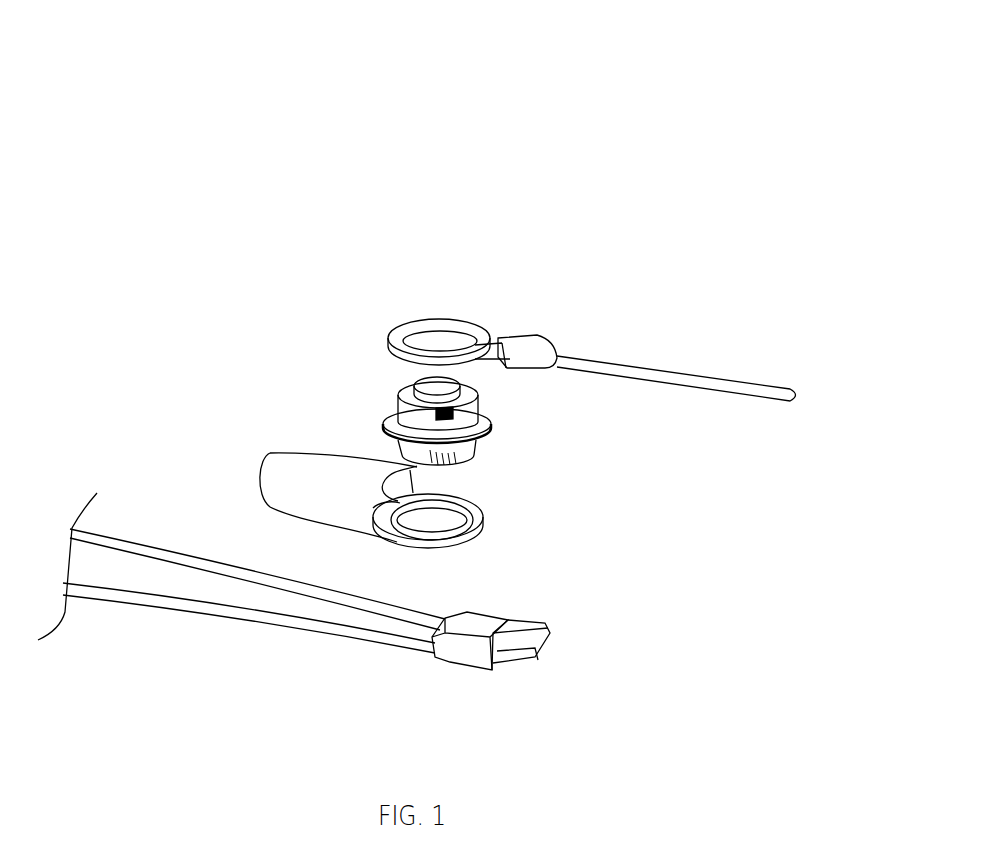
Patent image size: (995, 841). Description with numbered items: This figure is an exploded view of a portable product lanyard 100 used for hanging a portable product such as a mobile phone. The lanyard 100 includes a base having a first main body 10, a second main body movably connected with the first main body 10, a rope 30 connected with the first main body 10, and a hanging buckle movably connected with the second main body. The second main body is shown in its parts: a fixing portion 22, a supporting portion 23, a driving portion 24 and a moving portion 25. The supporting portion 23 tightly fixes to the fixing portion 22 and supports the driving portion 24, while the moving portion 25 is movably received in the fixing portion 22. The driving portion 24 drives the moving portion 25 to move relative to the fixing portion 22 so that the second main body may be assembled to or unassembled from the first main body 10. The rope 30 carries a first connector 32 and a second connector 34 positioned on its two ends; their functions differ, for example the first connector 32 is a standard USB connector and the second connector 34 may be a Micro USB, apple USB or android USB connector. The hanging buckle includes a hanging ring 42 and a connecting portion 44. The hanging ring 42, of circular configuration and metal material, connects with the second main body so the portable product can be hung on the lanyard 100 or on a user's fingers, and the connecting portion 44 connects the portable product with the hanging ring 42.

The portable product lanyard 100 is at (444, 118).
The hanging ring 42 is at (440, 330).
The connecting portion 44 is at (535, 357).
The fixing portion 22 is at (490, 427).
The driving portion 24 is at (415, 382).
The supporting portion 23 is at (410, 390).
The moving portion 25 is at (385, 409).
The first main body 10 is at (480, 520).
The rope 30 is at (318, 626).
The second connector 34 is at (453, 650).
The first connector 32 is at (548, 622).